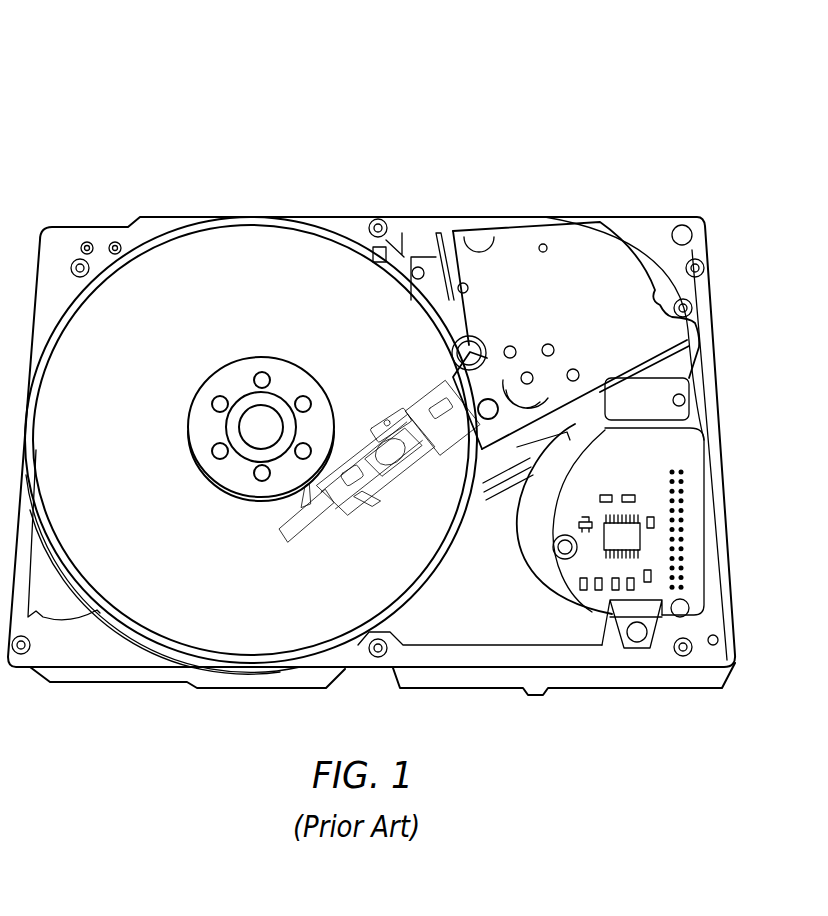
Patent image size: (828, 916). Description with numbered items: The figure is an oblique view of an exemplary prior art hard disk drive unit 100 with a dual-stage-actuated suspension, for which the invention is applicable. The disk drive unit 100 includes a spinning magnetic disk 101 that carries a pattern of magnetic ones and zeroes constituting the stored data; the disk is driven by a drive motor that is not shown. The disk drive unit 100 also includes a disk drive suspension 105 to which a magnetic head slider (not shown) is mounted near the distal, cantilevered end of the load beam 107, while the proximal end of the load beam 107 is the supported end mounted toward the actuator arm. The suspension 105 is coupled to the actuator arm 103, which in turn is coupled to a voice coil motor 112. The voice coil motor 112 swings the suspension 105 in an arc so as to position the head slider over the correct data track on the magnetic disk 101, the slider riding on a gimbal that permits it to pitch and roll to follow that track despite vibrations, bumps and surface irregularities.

The disk drive unit 100 is at (269, 176).
The magnetic disk 101 is at (215, 272).
The actuator arm 103 is at (502, 437).
The disk drive suspension 105 is at (318, 548).
The load beam 107 is at (366, 455).
The voice coil motor 112 is at (560, 307).